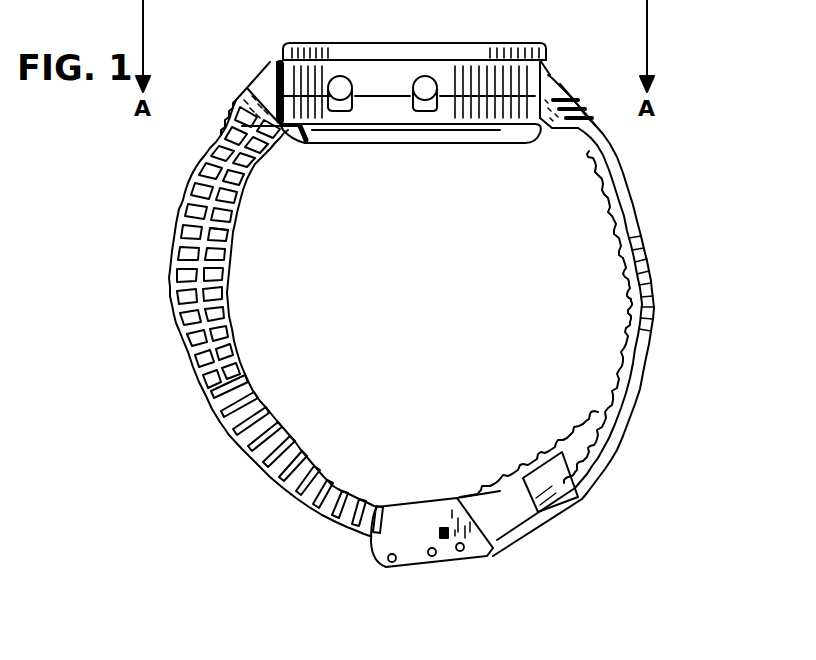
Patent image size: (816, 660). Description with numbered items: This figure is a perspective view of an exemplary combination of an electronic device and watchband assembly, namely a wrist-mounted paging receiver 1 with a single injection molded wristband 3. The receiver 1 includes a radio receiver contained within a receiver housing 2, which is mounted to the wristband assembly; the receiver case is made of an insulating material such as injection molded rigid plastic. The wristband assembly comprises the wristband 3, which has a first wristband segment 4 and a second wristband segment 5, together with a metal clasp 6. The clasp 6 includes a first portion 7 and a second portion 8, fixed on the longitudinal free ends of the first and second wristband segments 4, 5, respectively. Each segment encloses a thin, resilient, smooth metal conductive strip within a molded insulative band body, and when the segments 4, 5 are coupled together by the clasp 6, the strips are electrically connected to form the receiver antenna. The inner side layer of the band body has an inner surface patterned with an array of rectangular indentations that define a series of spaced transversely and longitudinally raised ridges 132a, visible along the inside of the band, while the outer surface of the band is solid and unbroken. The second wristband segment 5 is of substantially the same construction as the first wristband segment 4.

The wrist-mounted paging receiver 1 is at (230, 105).
The receiver housing 2 is at (283, 57).
The wristband 3 is at (160, 190).
The first wristband segment 4 is at (186, 344).
The second wristband segment 5 is at (652, 225).
The metal clasp 6 is at (447, 497).
The first clasp portion 7 is at (540, 530).
The second clasp portion 8 is at (372, 553).
The raised ridges 132a is at (218, 240).